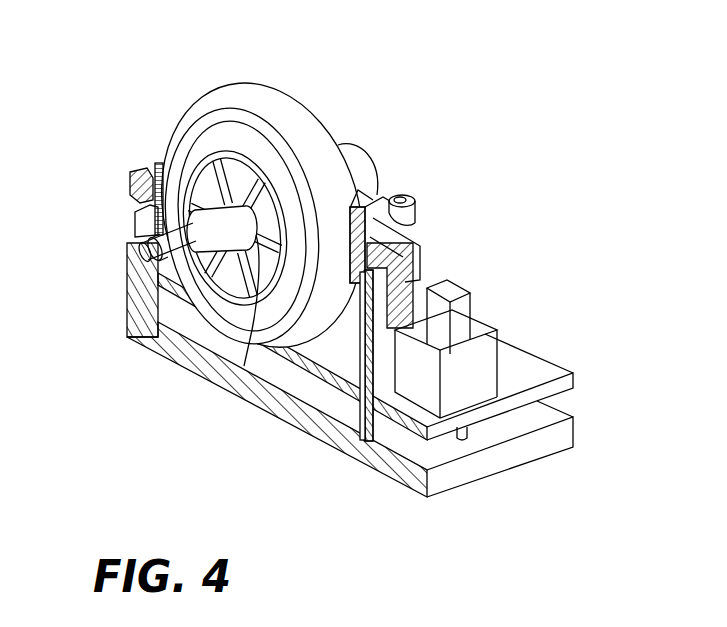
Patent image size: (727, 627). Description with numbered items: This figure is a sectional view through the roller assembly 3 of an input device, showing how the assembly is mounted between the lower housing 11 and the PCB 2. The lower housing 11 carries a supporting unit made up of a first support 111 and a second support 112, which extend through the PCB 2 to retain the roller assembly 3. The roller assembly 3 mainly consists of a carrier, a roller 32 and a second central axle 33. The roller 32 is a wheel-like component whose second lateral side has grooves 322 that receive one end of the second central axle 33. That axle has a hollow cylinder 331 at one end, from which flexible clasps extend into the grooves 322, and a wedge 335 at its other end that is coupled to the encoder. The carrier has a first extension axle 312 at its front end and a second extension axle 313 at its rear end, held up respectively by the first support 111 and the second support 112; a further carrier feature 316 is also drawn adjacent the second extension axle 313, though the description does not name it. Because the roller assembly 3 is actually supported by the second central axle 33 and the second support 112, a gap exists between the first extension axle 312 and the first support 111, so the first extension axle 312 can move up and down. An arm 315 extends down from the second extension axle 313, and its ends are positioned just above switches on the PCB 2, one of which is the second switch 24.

The roller assembly 3 is at (322, 80).
The roller 32 is at (311, 130).
The grooves 322 is at (245, 362).
The hollow cylinder 331 is at (245, 225).
The second central axle 33 is at (160, 349).
The wedge 335 is at (148, 250).
The first extension axle 312 is at (130, 187).
The second extension axle 313 is at (400, 231).
The arm 315 is at (448, 296).
The bushing 316 is at (403, 194).
The first support 111 is at (140, 213).
The second support 112 is at (410, 286).
The lower housing 11 is at (543, 410).
The PCB 2 is at (520, 362).
The second switch 24 is at (490, 383).